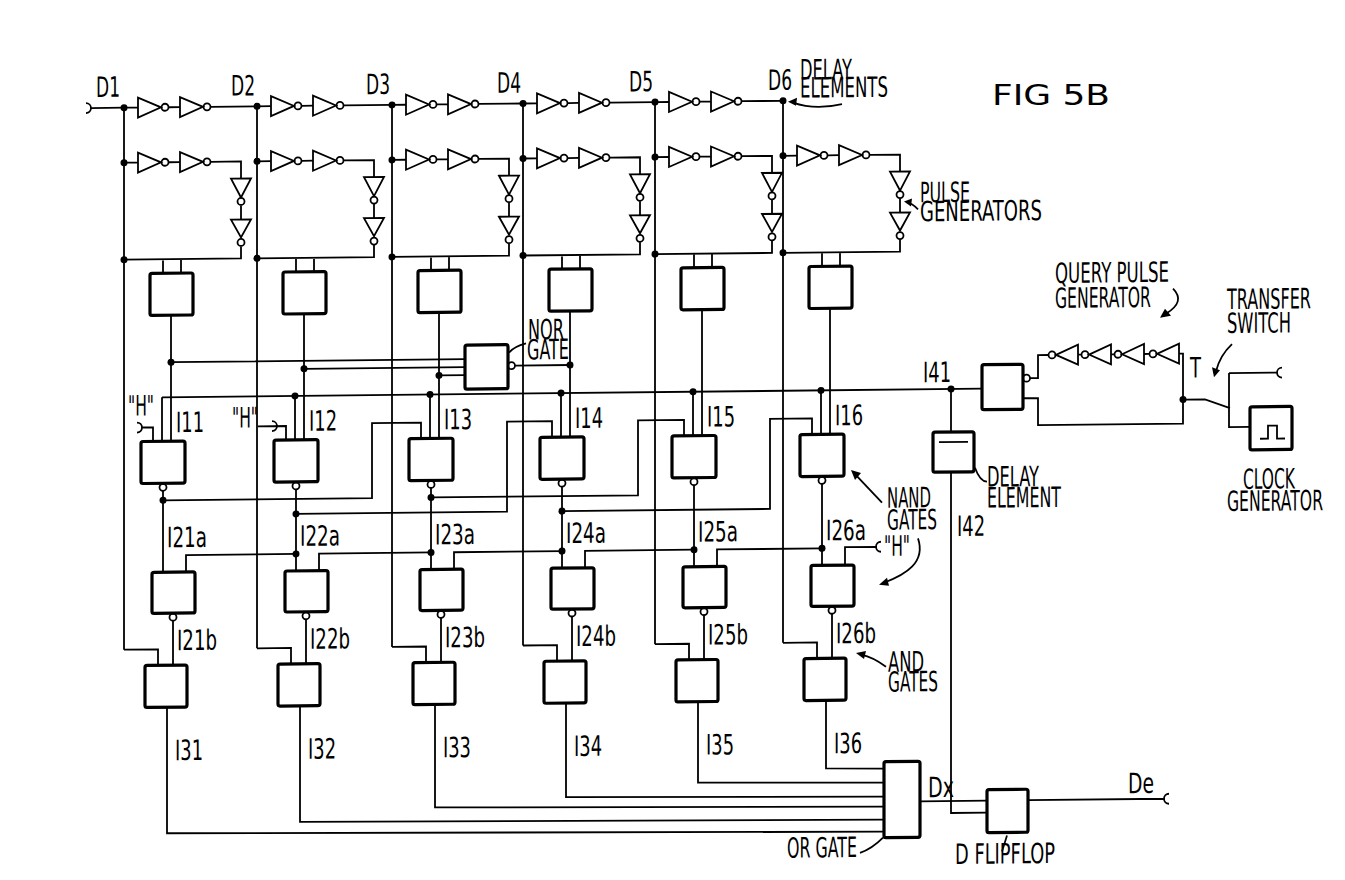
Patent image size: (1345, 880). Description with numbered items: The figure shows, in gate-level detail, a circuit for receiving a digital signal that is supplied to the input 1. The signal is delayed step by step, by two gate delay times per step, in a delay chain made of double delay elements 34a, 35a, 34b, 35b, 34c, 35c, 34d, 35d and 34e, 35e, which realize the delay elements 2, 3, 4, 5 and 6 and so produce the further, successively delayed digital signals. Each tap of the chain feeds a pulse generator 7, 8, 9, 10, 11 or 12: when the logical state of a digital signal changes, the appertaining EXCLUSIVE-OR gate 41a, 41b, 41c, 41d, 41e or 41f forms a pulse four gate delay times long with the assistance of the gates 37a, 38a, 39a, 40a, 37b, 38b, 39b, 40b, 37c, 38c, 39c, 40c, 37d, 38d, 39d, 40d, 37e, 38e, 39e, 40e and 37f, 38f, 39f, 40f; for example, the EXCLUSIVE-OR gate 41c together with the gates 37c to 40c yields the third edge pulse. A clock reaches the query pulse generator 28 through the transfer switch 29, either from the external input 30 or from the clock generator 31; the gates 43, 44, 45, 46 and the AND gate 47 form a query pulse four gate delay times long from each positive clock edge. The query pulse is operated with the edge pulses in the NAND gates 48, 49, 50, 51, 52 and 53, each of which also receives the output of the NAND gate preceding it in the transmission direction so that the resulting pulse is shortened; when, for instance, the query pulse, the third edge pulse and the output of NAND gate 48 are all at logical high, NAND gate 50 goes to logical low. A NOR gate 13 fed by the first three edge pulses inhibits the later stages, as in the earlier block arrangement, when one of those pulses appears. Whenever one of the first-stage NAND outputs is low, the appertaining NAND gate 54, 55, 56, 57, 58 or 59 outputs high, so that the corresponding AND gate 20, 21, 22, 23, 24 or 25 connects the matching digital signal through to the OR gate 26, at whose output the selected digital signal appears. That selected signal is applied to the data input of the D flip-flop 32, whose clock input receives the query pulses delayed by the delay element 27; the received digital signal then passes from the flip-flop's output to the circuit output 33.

The input 1 is at (104, 122).
The delay element 2 is at (190, 70).
The delay element 3 is at (324, 69).
The delay element 4 is at (457, 68).
The delay element 5 is at (589, 66).
The delay element 6 is at (719, 65).
The pulse generator 7 is at (187, 198).
The pulse generator 8 is at (320, 197).
The pulse generator 9 is at (455, 196).
The pulse generator 10 is at (586, 194).
The pulse generator 11 is at (718, 193).
The pulse generator 12 is at (864, 191).
The NOR gate 13 is at (490, 353).
The AND gate 20 is at (181, 686).
The AND gate 21 is at (314, 684).
The AND gate 22 is at (449, 683).
The AND gate 23 is at (580, 682).
The AND gate 24 is at (712, 680).
The AND gate 25 is at (840, 679).
The OR gate 26 is at (909, 782).
The delay element 27 is at (967, 430).
The query pulse generator 28 is at (1103, 369).
The transfer switch 29 is at (1220, 399).
The input 30 is at (1259, 355).
The clock generator 31 is at (1256, 460).
The D flip-flop 32 is at (1007, 792).
The circuit output 33 is at (1104, 785).
The delay gate 34a is at (151, 91).
The delay gate 34b is at (284, 90).
The delay gate 34c is at (419, 88).
The delay gate 34d is at (550, 87).
The delay gate 34e is at (682, 86).
The delay gate 35a is at (197, 91).
The delay gate 35b is at (330, 89).
The delay gate 35c is at (465, 88).
The delay gate 35d is at (596, 87).
The delay gate 35e is at (692, 58).
The gate 37a is at (149, 148).
The gate 37b is at (282, 147).
The gate 37c is at (417, 145).
The gate 37d is at (548, 144).
The gate 37e is at (680, 143).
The gate 37f is at (808, 141).
The gate 38a is at (194, 148).
The gate 38b is at (327, 146).
The gate 38c is at (462, 145).
The gate 38d is at (593, 144).
The gate 38e is at (725, 142).
The gate 38f is at (855, 141).
The gate 39a is at (222, 193).
The gate 39b is at (355, 192).
The gate 39c is at (490, 191).
The gate 39d is at (621, 189).
The gate 39e is at (753, 188).
The gate 39f is at (918, 186).
The gate 40a is at (222, 233).
The gate 40b is at (355, 232).
The gate 40c is at (490, 231).
The gate 40d is at (621, 229).
The gate 40e is at (753, 228).
The gate 40f is at (918, 226).
The EXCLUSIVE-OR gate 41a is at (190, 295).
The EXCLUSIVE-OR gate 41b is at (323, 293).
The EXCLUSIVE-OR gate 41c is at (458, 292).
The EXCLUSIVE-OR gate 41d is at (589, 290).
The EXCLUSIVE-OR gate 41e is at (721, 289).
The EXCLUSIVE-OR gate 41f is at (847, 288).
The gate 43 is at (1165, 338).
The gate 44 is at (1130, 338).
The gate 45 is at (1097, 338).
The gate 46 is at (1064, 339).
The AND gate 47 is at (1006, 370).
The NAND gate 48 is at (177, 466).
The NAND gate 49 is at (310, 464).
The NAND gate 50 is at (445, 463).
The NAND gate 51 is at (576, 462).
The NAND gate 52 is at (708, 460).
The NAND gate 53 is at (836, 459).
The NAND gate 54 is at (186, 596).
The NAND gate 55 is at (319, 594).
The NAND gate 56 is at (454, 593).
The NAND gate 57 is at (585, 591).
The NAND gate 58 is at (717, 590).
The NAND gate 59 is at (845, 589).